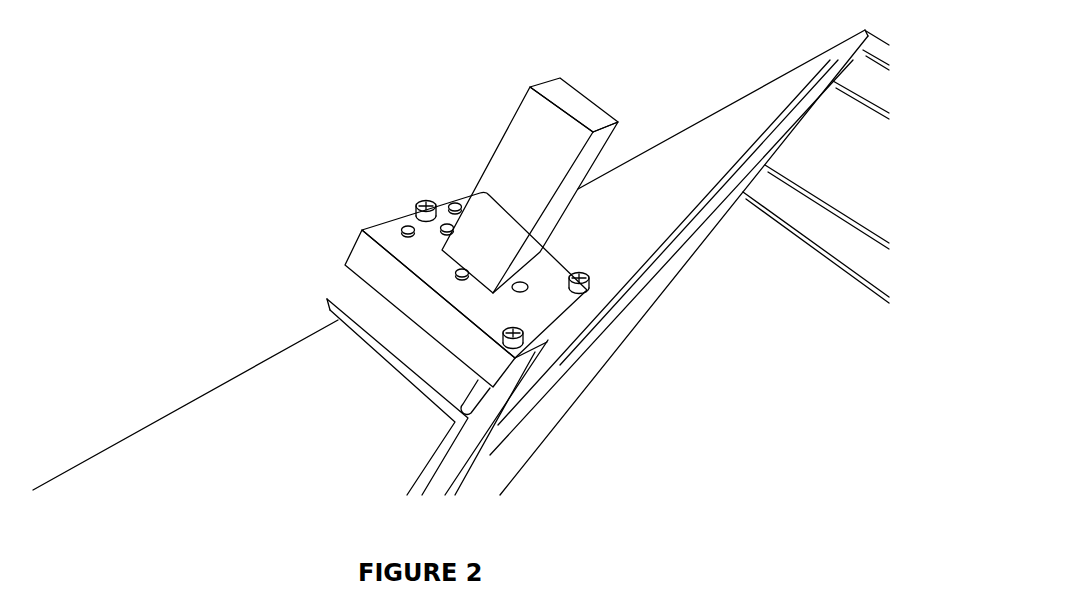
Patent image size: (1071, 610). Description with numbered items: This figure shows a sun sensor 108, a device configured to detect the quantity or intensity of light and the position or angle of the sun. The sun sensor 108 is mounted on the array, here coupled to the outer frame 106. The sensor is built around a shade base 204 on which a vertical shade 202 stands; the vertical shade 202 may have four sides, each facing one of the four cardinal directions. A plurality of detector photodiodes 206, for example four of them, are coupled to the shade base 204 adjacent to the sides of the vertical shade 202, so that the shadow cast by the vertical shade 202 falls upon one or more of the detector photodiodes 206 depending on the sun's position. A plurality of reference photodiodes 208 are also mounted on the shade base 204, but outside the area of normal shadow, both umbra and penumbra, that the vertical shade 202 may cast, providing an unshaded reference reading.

The outer frame 106 is at (122, 426).
The sun sensor 108 is at (669, 67).
The vertical shade 202 is at (575, 79).
The shade base 204 is at (385, 285).
The detector photodiodes 206 is at (433, 208).
The reference photodiodes 208 is at (450, 186).